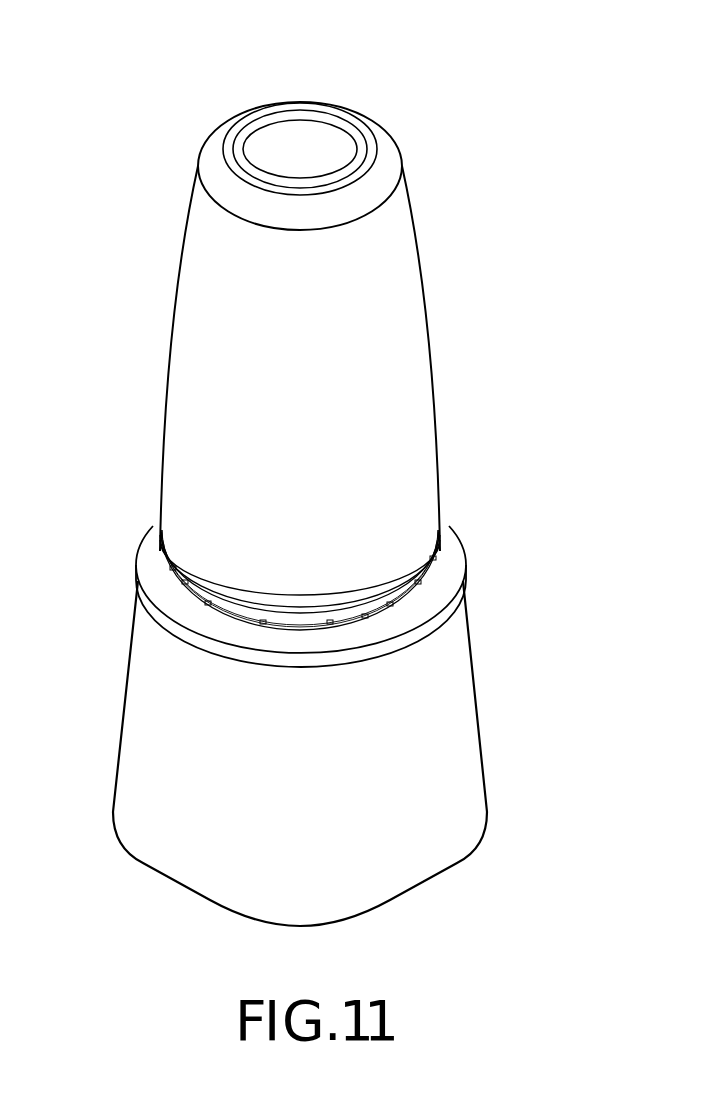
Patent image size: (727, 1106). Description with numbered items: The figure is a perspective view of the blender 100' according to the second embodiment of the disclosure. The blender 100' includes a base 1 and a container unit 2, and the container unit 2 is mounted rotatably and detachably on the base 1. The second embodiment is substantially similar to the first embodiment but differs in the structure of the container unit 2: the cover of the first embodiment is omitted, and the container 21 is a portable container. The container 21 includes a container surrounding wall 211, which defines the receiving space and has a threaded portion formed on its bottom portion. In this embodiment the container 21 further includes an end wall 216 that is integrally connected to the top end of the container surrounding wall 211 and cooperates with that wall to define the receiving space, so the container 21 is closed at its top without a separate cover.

The blender 100' is at (311, 494).
The base 1 is at (487, 707).
The container unit 2 is at (474, 274).
The container 21 is at (430, 230).
The container surrounding wall 211 is at (417, 390).
The end wall 216 is at (322, 153).